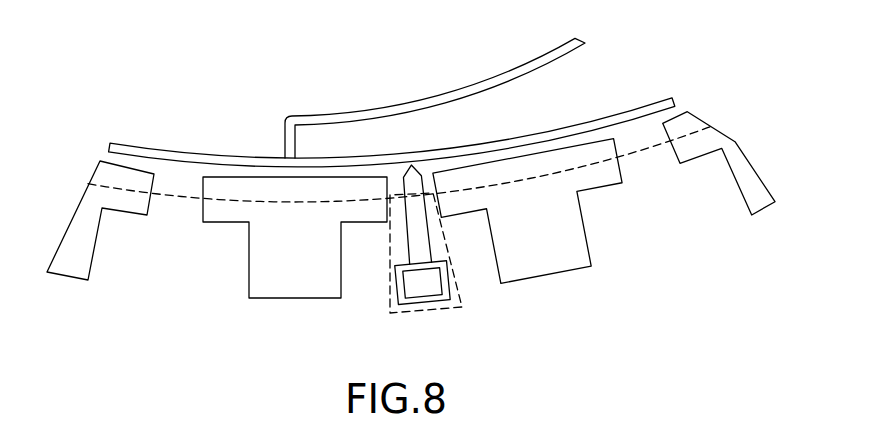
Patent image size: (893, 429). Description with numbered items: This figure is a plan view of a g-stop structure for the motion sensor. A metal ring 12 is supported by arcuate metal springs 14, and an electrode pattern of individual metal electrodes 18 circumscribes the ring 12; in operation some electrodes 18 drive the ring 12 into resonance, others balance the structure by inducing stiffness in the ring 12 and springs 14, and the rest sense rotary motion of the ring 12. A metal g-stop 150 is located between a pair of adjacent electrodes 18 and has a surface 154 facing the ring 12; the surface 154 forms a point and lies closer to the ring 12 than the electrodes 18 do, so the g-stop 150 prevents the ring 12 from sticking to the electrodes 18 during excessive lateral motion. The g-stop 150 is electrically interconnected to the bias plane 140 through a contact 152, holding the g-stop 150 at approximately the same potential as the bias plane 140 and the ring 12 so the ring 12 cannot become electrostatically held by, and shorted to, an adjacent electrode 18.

The metal ring 12 is at (610, 117).
The arcuate metal springs 14 is at (407, 103).
The metal electrodes 18 is at (250, 265).
The bias plane 140 is at (390, 246).
The metal g-stop 150 is at (423, 237).
The contact 152 is at (430, 290).
The surface 154 is at (411, 166).